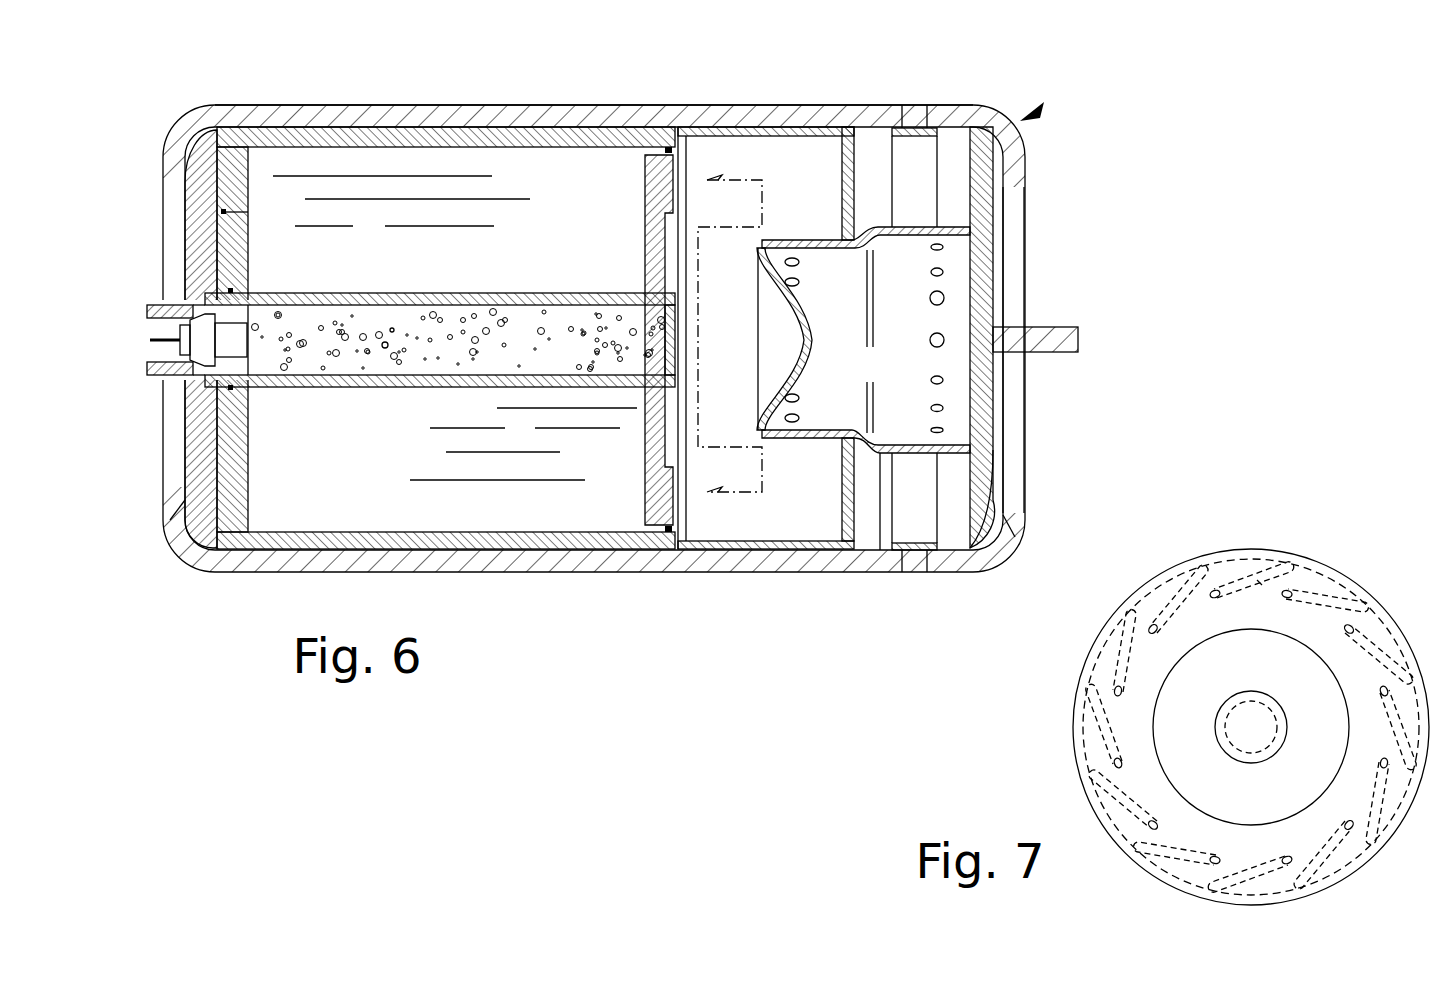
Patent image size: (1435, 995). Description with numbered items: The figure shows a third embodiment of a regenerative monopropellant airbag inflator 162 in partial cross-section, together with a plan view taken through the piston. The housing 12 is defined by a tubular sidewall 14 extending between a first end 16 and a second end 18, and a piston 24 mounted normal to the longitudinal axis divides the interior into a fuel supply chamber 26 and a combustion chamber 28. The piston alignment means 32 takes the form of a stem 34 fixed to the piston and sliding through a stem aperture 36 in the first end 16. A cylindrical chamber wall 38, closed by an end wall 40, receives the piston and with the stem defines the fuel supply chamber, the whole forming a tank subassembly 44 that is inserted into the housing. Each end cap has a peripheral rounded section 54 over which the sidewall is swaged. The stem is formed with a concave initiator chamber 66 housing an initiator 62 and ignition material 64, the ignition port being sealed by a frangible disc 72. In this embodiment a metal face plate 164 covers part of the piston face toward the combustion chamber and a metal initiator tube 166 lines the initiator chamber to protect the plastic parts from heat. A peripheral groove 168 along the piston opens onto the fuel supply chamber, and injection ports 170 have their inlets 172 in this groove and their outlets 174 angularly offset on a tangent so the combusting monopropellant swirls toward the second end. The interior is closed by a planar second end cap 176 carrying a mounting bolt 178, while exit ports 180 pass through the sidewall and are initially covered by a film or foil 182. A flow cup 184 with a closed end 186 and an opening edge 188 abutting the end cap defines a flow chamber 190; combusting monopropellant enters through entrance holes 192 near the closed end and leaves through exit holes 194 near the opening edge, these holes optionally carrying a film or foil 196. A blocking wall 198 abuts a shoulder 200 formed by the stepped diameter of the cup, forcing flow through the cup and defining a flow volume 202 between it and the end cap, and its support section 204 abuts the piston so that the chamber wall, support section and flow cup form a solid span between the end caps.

In FIG. 6, the housing 12 is at (265, 105).
In FIG. 6, the sidewall 14 is at (470, 105).
In FIG. 6, the first end 16 is at (178, 128).
In FIG. 6, the second end 18 is at (1025, 168).
In FIG. 6, the piston 24 is at (648, 240).
In FIG. 7, the piston 24 is at (1150, 582).
In FIG. 6, the fuel supply chamber 26 is at (200, 240).
In FIG. 6, the combustion chamber 28 is at (766, 338).
In FIG. 6, the piston alignment means 32 is at (365, 292).
In FIG. 6, the stem 34 is at (275, 292).
In FIG. 6, the stem aperture 36 is at (200, 385).
In FIG. 6, the chamber wall 38 is at (345, 532).
In FIG. 6, the end wall 40 is at (250, 500).
In FIG. 6, the tank subassembly 44 is at (365, 127).
In FIG. 6, the peripheral rounded section 54 is at (170, 520).
In FIG. 6, the initiator 62 is at (178, 337).
In FIG. 6, the ignition material 64 is at (313, 360).
In FIG. 7, the ignition material 64 is at (1185, 755).
In FIG. 6, the initiator chamber 66 is at (385, 362).
In FIG. 7, the frangible disc 72 is at (1268, 760).
In FIG. 6, the inflator 162 is at (1022, 120).
In FIG. 6, the face plate 164 is at (698, 315).
In FIG. 6, the initiator tube 166 is at (468, 375).
In FIG. 6, the peripheral groove 168 is at (650, 157).
In FIG. 7, the peripheral groove 168 is at (1340, 588).
In FIG. 6, the injection ports 170 is at (655, 520).
In FIG. 7, the injection ports 170 is at (1257, 580).
In FIG. 7, the inlets 172 is at (1290, 562).
In FIG. 7, the outlets 174 is at (1215, 598).
In FIG. 6, the second end cap 176 is at (1000, 258).
In FIG. 6, the mounting bolt 178 is at (1080, 328).
In FIG. 6, the exit ports 180 is at (925, 118).
In FIG. 6, the film or foil 182 is at (902, 518).
In FIG. 6, the flow cup 184 is at (875, 225).
In FIG. 6, the closed end 186 is at (800, 352).
In FIG. 6, the opening edge 188 is at (995, 450).
In FIG. 6, the flow chamber 190 is at (890, 389).
In FIG. 6, the entrance holes 192 is at (800, 265).
In FIG. 6, the exit holes 194 is at (937, 340).
In FIG. 6, the film or foil 196 is at (788, 240).
In FIG. 6, the blocking wall 198 is at (846, 500).
In FIG. 6, the shoulder 200 is at (862, 445).
In FIG. 6, the flow volume 202 is at (953, 508).
In FIG. 6, the support section 204 is at (700, 533).